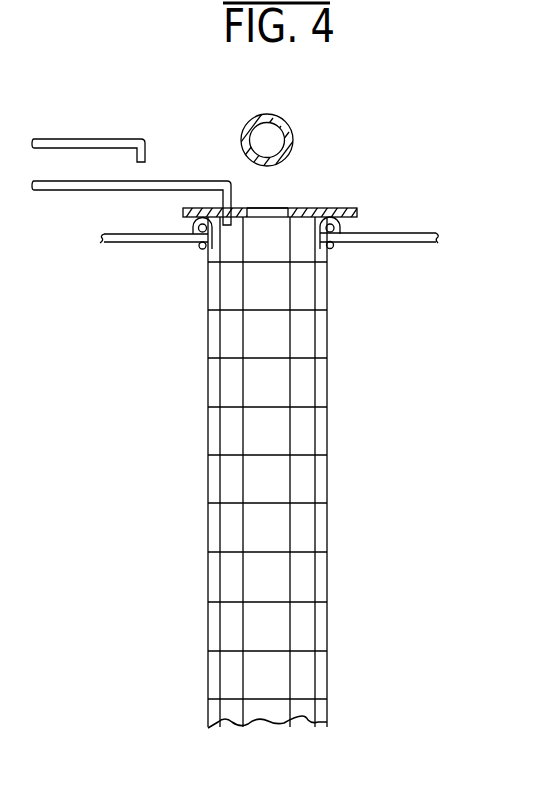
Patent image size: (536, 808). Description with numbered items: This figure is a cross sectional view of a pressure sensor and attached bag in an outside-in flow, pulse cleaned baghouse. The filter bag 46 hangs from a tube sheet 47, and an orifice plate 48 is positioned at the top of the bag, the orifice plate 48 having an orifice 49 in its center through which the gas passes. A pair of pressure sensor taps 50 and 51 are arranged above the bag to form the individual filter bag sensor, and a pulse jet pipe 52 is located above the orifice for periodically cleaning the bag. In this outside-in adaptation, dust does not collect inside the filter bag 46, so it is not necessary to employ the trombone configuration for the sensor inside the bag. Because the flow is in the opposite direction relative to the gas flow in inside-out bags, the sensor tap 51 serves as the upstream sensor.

The filter bag 46 is at (327, 432).
The tube sheet 47 is at (153, 243).
The orifice plate 48 is at (342, 206).
The orifice 49 is at (272, 208).
The pressure sensor tap 50 is at (70, 139).
The pressure sensor tap 51 is at (98, 190).
The pulse jet pipe 52 is at (289, 128).